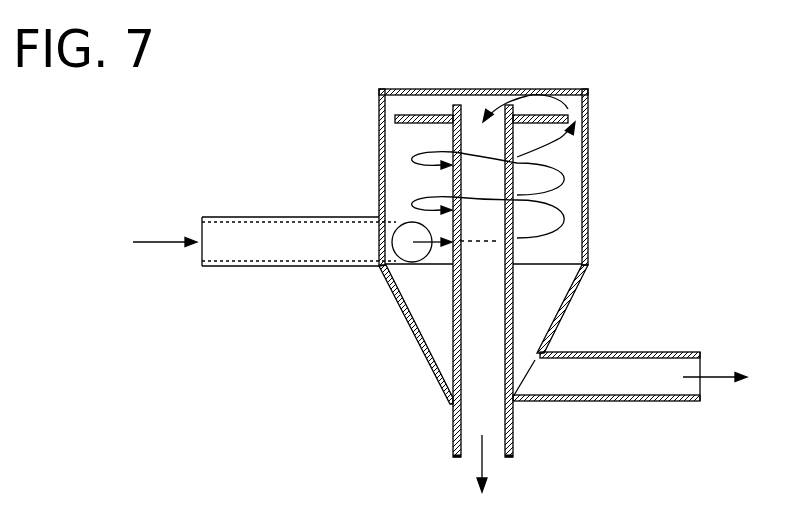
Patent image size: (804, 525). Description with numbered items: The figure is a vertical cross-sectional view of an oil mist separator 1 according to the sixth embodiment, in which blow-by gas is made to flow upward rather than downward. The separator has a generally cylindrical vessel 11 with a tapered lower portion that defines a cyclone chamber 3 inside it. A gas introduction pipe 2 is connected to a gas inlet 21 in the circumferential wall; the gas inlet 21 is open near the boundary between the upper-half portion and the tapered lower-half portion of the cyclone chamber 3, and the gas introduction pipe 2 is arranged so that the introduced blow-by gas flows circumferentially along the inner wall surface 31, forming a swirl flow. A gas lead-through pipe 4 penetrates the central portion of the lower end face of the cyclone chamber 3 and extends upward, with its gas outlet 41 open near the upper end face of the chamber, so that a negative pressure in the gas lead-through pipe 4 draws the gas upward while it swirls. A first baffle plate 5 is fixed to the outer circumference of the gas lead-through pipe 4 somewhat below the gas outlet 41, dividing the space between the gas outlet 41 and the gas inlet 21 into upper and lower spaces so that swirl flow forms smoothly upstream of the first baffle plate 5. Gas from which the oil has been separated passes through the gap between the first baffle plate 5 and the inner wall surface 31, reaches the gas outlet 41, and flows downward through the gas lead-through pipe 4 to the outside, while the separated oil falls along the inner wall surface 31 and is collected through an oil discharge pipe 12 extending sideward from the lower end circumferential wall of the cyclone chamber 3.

The oil mist separator 1 is at (545, 215).
The vessel 11 is at (586, 253).
The oil discharge pipe 12 is at (590, 402).
The gas introduction pipe 2 is at (292, 245).
The gas inlet 21 is at (410, 252).
The cyclone chamber 3 is at (562, 181).
The inner wall surface 31 is at (570, 208).
The gas lead-through pipe 4 is at (390, 263).
The gas outlet 41 is at (465, 100).
The first baffle plate 5 is at (417, 117).